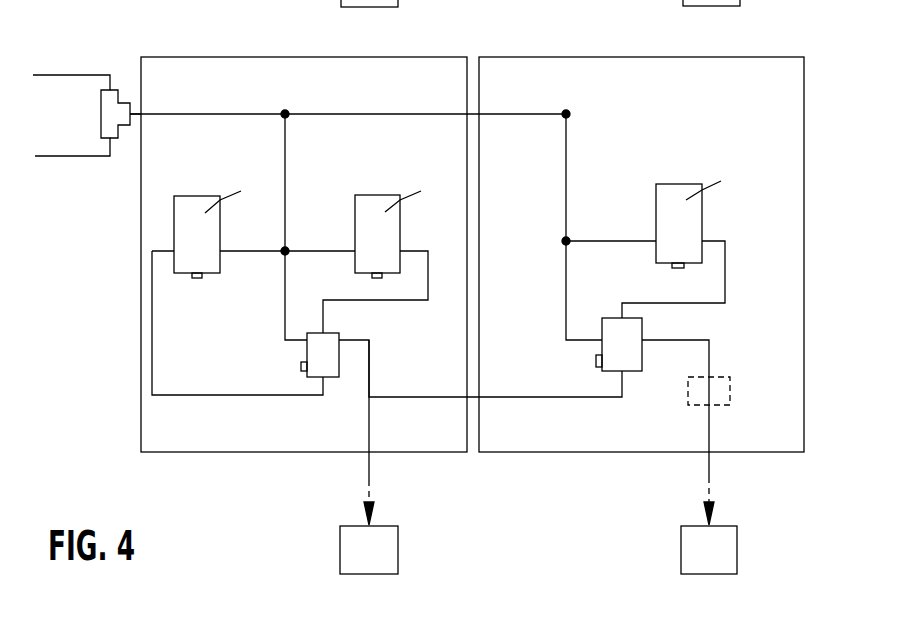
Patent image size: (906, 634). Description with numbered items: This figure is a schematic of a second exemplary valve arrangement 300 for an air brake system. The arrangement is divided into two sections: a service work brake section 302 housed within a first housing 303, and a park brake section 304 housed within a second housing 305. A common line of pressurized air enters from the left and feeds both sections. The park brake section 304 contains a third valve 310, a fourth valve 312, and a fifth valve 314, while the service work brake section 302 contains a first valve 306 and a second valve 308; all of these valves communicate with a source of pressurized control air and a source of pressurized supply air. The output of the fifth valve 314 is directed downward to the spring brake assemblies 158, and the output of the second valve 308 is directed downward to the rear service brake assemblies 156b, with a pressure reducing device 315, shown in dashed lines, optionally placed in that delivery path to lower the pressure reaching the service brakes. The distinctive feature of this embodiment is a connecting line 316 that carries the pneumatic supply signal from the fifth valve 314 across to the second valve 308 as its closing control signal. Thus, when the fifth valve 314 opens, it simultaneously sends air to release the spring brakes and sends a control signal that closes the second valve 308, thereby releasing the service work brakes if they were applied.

The valve arrangement 300 is at (766, 25).
The service work brake section 302 is at (539, 77).
The first housing 303 is at (805, 220).
The park brake section 304 is at (200, 82).
The second housing 305 is at (141, 259).
The first valve 306 is at (688, 224).
The second valve 308 is at (619, 344).
The third valve 310 is at (207, 234).
The fourth valve 312 is at (388, 234).
The fifth valve 314 is at (320, 355).
The pressure reducing device 315 is at (730, 389).
The interconnect line 316 is at (524, 398).
The spring brake assemblies 158 is at (398, 545).
The rear service brake assemblies 156b is at (737, 545).